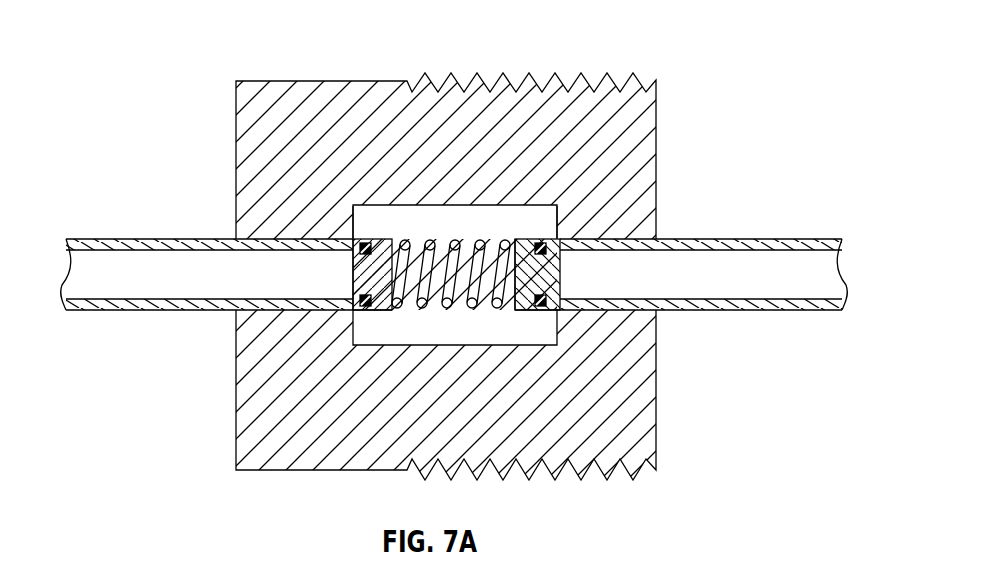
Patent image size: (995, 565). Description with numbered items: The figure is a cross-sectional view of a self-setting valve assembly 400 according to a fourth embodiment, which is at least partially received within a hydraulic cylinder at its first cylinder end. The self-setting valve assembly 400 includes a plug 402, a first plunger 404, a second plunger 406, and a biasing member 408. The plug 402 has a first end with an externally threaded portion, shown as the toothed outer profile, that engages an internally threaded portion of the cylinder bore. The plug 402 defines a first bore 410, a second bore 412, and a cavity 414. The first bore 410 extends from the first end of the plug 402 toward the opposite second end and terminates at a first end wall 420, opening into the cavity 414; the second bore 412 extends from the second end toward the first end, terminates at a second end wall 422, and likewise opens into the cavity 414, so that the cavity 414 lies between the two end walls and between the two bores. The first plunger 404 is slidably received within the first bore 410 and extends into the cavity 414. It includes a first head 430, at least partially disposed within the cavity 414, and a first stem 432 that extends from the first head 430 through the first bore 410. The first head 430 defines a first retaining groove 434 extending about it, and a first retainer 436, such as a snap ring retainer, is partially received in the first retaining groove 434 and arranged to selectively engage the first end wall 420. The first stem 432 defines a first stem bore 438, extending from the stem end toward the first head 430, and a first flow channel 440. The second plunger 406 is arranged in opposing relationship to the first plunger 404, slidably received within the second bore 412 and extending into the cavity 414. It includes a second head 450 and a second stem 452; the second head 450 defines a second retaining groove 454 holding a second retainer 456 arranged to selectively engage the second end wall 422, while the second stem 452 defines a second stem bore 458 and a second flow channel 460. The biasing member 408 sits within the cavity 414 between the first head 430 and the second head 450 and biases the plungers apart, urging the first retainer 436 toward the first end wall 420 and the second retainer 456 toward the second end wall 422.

The self-setting valve assembly 400 is at (702, 26).
The plug 402 is at (672, 94).
The first plunger 404 is at (688, 214).
The second plunger 406 is at (150, 336).
The biasing member 408 is at (474, 308).
The first bore 410 is at (562, 240).
The second bore 412 is at (318, 239).
The cavity 414 is at (463, 205).
The first end wall 420 is at (552, 233).
The second end wall 422 is at (357, 233).
The first head 430 is at (520, 310).
The first stem 432 is at (750, 306).
The first retaining groove 434 is at (546, 296).
The first retainer 436 is at (550, 304).
The first stem bore 438 is at (843, 283).
The first flow channel 440 is at (773, 240).
The second head 450 is at (362, 306).
The second stem 452 is at (118, 306).
The second retaining groove 454 is at (364, 295).
The second retainer 456 is at (356, 308).
The second stem bore 458 is at (68, 272).
The second flow channel 460 is at (160, 239).